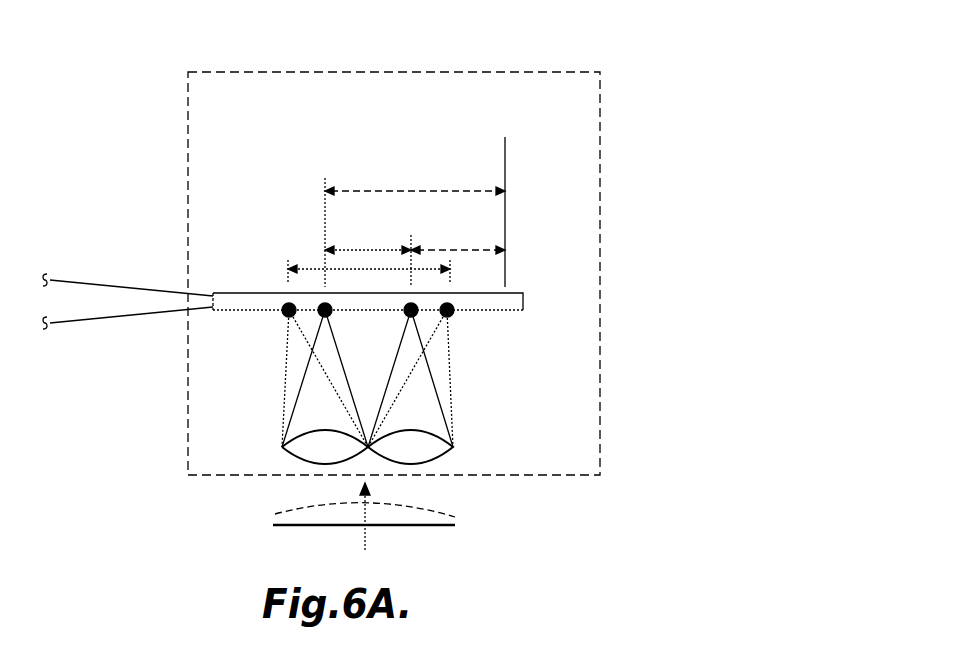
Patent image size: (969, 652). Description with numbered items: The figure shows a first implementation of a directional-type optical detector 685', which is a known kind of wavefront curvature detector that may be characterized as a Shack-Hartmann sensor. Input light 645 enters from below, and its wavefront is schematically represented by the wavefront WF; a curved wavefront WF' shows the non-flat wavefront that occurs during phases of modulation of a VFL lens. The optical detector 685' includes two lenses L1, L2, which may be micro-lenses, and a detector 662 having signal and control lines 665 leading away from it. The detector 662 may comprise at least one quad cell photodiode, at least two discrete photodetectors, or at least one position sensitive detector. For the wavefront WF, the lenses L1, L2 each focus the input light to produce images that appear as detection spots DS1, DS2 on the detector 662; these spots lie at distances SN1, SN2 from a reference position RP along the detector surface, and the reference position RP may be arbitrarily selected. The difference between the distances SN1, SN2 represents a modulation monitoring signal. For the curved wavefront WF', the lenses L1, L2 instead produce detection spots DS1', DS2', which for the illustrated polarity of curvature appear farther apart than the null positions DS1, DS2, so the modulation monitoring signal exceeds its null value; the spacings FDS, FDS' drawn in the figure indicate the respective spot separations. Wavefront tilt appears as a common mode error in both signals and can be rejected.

The signal and control line(s) 665 is at (70, 256).
The detector 662 is at (524, 297).
The optical detector 685' is at (437, 273).
The input light 645 is at (365, 537).
The reference position RP is at (505, 157).
The distance SN1 is at (470, 250).
The distance SN2 is at (470, 191).
The focus detector spacing FDS is at (480, 138).
The focus detector spacing (outer) FDS' is at (343, 207).
The detection spot DS1 is at (443, 375).
The detection spot DS1' is at (459, 375).
The detection spot DS2 is at (292, 375).
The detection spot DS2' is at (266, 375).
The lens L1 is at (453, 450).
The lens L2 is at (282, 450).
The wavefront WF is at (379, 553).
The curved wavefront WF' is at (406, 510).